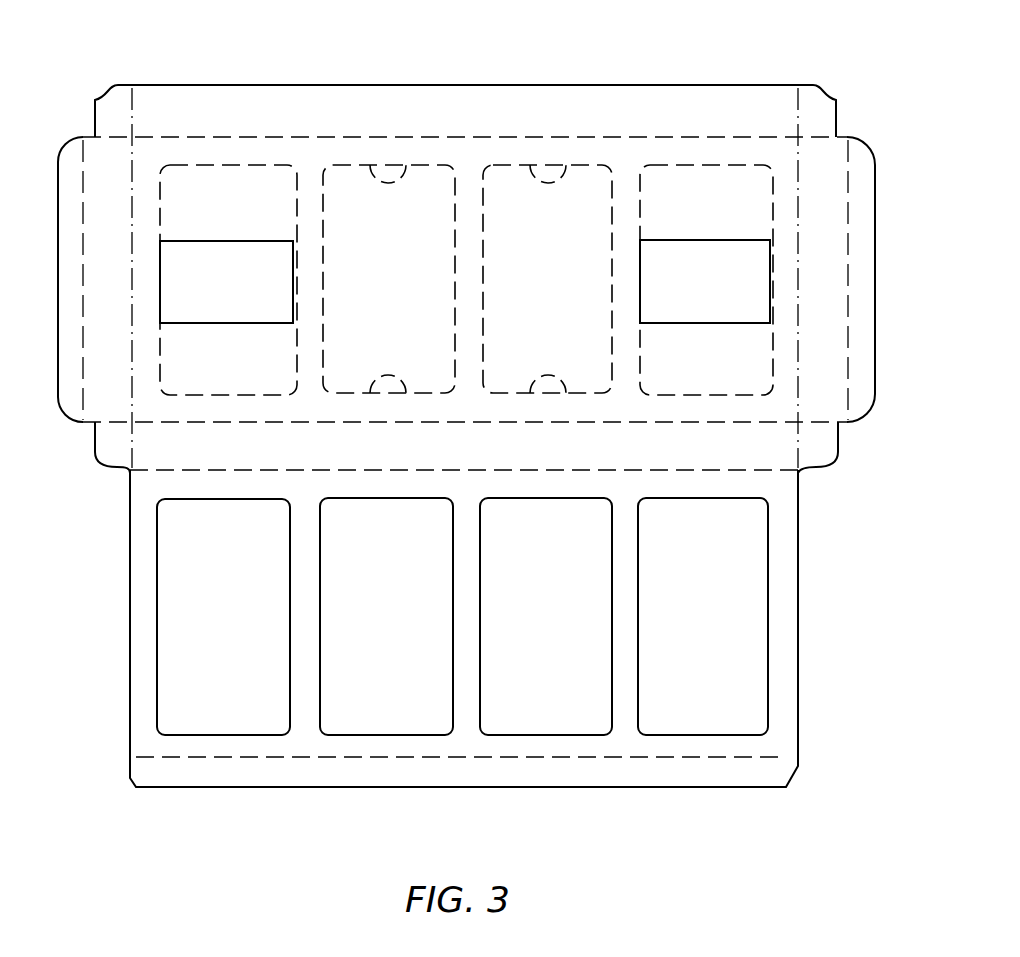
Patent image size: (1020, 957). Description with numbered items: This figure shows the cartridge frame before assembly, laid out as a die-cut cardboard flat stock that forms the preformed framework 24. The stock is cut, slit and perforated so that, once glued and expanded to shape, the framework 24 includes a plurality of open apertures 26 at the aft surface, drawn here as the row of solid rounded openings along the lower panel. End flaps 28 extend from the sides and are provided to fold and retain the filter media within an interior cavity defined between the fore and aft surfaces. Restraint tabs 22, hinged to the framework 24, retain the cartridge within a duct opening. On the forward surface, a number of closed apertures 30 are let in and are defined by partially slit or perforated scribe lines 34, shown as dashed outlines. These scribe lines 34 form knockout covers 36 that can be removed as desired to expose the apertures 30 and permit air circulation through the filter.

The restraint tabs 22 is at (228, 216).
The framework 24 is at (815, 83).
The open apertures 26 is at (221, 638).
The end flaps 28 is at (876, 353).
The closed apertures 30 is at (508, 165).
The scribe lines 34 is at (324, 245).
The knockout covers 36 is at (397, 294).